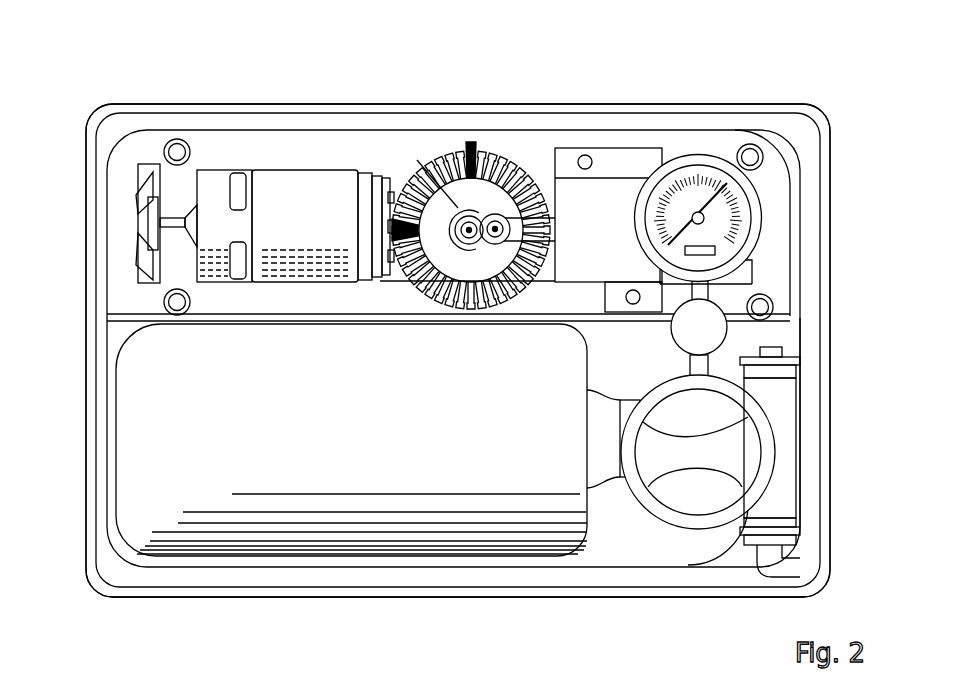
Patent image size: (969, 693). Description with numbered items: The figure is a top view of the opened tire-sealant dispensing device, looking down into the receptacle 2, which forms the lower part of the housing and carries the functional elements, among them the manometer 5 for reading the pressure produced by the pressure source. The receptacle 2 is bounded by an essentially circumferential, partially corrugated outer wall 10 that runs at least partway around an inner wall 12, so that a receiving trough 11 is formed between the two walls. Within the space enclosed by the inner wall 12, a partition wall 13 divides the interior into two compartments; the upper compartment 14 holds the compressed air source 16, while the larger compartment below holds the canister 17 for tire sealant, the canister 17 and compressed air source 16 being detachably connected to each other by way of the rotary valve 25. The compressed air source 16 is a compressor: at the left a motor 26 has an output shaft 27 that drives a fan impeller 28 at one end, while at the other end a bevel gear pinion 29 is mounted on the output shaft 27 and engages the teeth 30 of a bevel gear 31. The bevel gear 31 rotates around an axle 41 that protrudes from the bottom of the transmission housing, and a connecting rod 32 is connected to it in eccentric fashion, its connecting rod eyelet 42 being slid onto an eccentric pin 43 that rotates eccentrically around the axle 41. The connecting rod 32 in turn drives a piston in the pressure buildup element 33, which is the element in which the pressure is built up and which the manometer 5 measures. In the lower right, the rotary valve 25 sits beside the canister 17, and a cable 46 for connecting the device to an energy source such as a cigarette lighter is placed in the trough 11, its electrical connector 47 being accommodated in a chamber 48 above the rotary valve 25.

The receptacle 2 is at (845, 363).
The manometer 5 is at (702, 188).
The outer wall 10 is at (203, 103).
The receiving trough 11 is at (145, 578).
The inner wall 12 is at (99, 283).
The partition wall 13 is at (283, 315).
The compartment 14 is at (344, 150).
The compressed air source 16 is at (562, 158).
The canister 17 is at (528, 497).
The rotary valve 25 is at (698, 498).
The motor 26 is at (266, 187).
The output shaft 27 is at (172, 222).
The fan impeller 28 is at (143, 222).
The bevel gear pinion 29 is at (400, 222).
The teeth 30 is at (449, 162).
The bevel gear 31 is at (471, 145).
The connecting rod 32 is at (527, 233).
The pressure buildup element 33 is at (640, 167).
The axle 41 is at (469, 230).
The connecting rod eyelet 42 is at (495, 232).
The eccentric pin 43 is at (492, 240).
The cable 46 is at (798, 562).
The electrical connector 47 is at (788, 412).
The chamber 48 is at (795, 335).